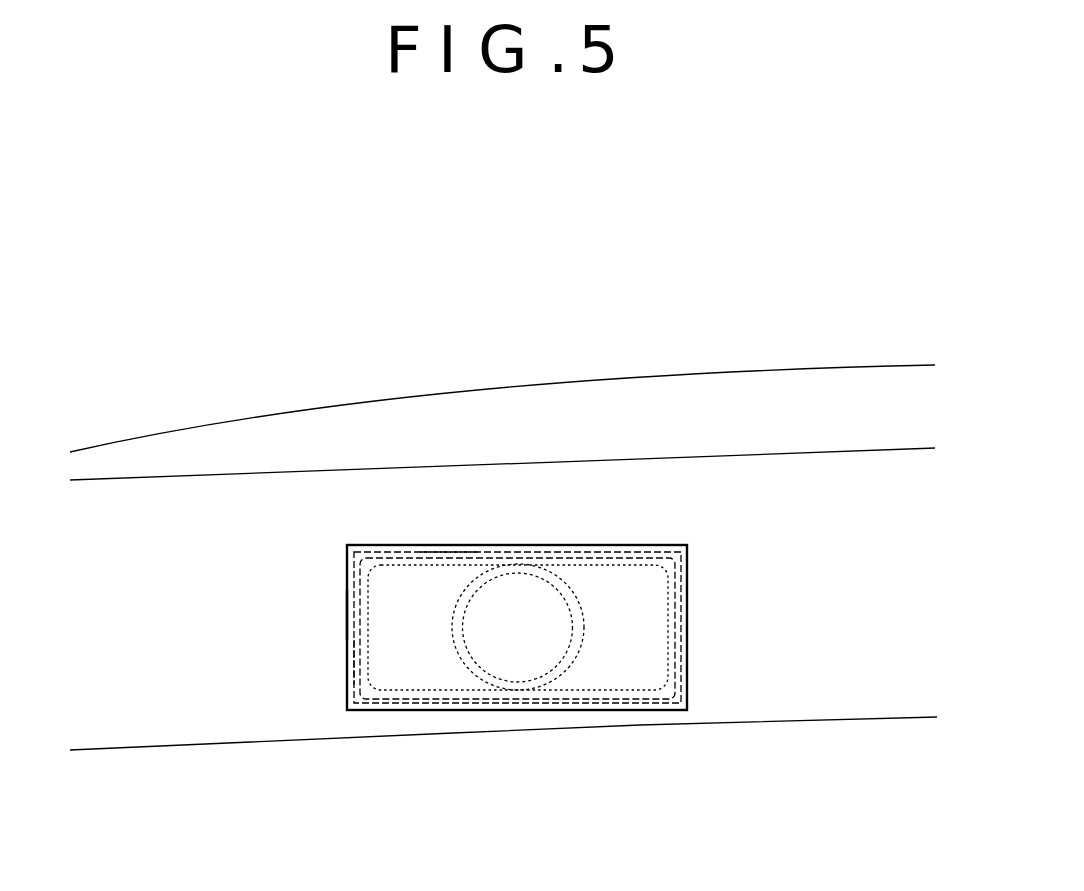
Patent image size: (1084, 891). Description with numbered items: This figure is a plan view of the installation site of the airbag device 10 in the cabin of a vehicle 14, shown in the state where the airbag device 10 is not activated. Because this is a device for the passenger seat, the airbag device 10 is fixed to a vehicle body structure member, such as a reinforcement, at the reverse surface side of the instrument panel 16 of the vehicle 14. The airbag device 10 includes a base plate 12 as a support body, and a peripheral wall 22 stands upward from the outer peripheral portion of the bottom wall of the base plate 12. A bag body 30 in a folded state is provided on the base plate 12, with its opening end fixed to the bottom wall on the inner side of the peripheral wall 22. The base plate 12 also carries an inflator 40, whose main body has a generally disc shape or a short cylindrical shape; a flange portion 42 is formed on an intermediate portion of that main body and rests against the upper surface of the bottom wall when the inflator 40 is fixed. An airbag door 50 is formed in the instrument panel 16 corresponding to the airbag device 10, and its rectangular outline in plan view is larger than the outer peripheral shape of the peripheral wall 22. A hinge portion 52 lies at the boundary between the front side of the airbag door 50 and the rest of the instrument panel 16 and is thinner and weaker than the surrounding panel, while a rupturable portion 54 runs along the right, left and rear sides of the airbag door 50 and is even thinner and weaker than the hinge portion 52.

The airbag device 10 is at (648, 602).
The base plate 12 is at (377, 550).
The vehicle 14 is at (663, 360).
The instrument panel 16 is at (232, 727).
The peripheral wall 22 is at (348, 607).
The bag body 30 is at (603, 583).
The inflator 40 is at (508, 595).
The flange portion 42 is at (452, 628).
The airbag door 50 is at (614, 675).
The hinge portion 52 is at (449, 545).
The rupturable portion 54 is at (350, 663).